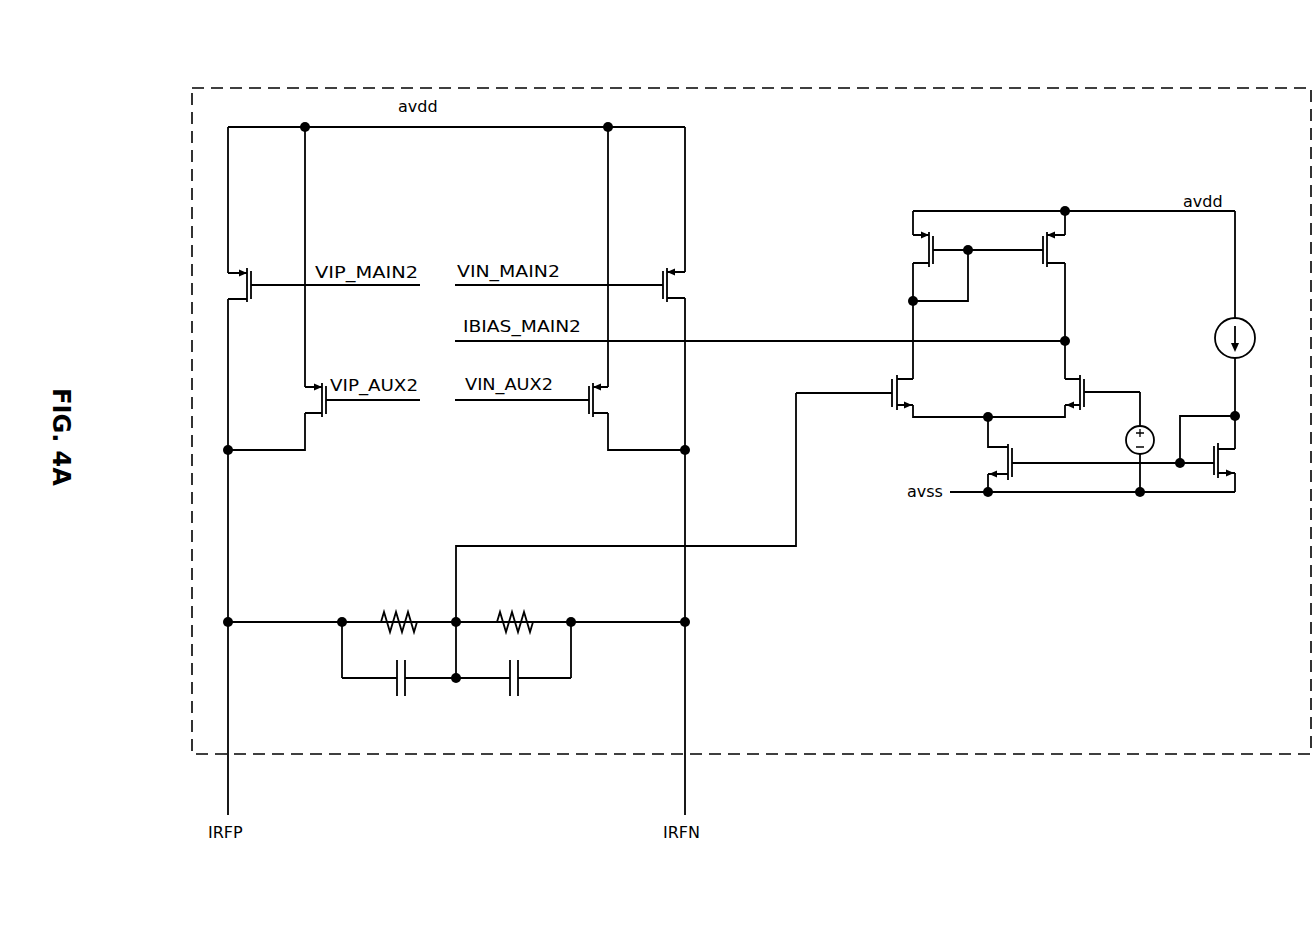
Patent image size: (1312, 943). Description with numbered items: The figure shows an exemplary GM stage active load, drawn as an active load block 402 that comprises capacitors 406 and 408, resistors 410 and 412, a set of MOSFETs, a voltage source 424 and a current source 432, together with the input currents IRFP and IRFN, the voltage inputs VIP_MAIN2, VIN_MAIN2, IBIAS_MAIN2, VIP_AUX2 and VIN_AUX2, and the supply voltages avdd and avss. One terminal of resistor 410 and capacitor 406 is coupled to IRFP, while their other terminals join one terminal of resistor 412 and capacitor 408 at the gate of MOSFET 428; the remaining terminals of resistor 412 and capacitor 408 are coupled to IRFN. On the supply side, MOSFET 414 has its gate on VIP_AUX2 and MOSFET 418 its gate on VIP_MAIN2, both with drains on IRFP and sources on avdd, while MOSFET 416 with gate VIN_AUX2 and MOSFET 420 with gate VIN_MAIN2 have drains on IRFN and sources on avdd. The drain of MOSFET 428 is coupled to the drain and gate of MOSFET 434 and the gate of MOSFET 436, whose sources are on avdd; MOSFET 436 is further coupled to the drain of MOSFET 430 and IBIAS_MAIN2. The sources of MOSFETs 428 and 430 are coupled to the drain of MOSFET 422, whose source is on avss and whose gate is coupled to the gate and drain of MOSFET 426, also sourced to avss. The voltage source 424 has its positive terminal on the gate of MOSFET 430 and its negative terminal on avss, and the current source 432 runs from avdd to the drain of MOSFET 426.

The active load block 402 is at (685, 88).
The capacitor 406 is at (392, 680).
The capacitor 408 is at (503, 680).
The resistor 410 is at (400, 612).
The resistor 412 is at (516, 612).
The MOSFET 414 is at (326, 418).
The MOSFET 416 is at (588, 418).
The MOSFET 418 is at (252, 303).
The MOSFET 420 is at (668, 268).
The MOSFET 422 is at (1011, 459).
The voltage source 424 is at (1132, 426).
The MOSFET 426 is at (1237, 467).
The MOSFET 428 is at (910, 383).
The MOSFET 430 is at (1066, 382).
The current source 432 is at (1222, 325).
The MOSFET 434 is at (913, 262).
The MOSFET 436 is at (1066, 262).